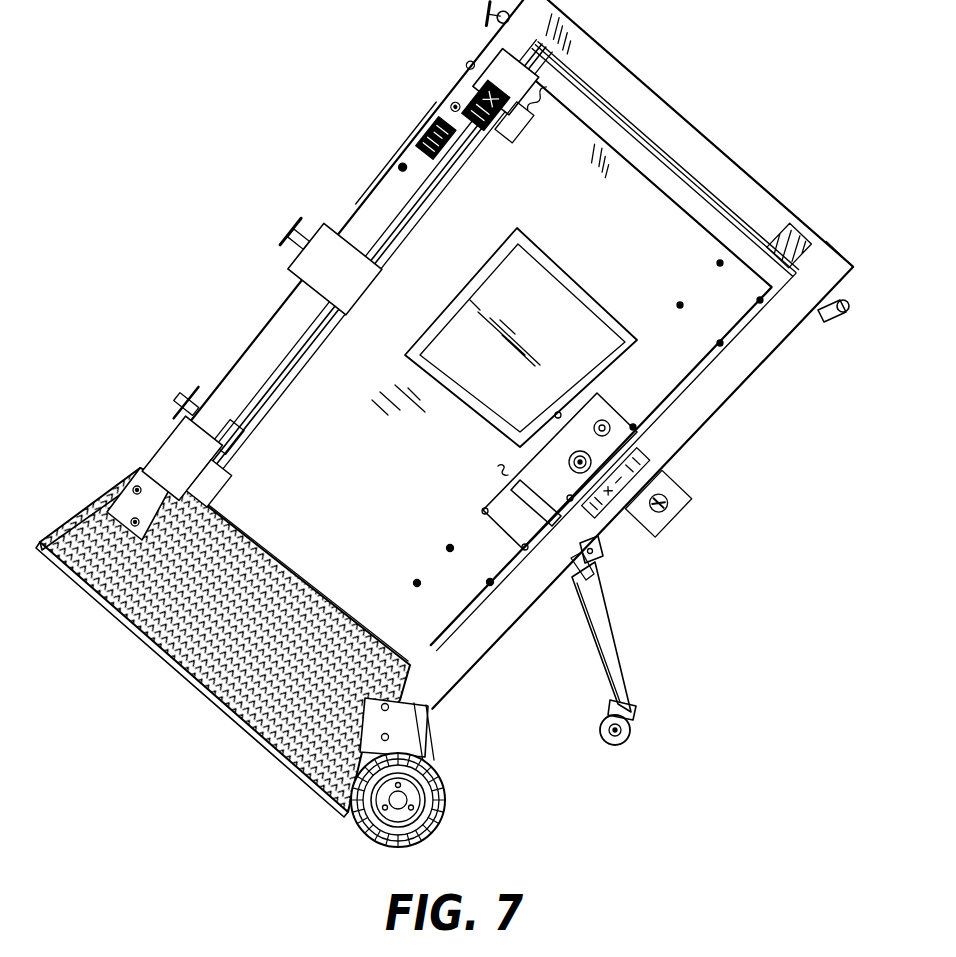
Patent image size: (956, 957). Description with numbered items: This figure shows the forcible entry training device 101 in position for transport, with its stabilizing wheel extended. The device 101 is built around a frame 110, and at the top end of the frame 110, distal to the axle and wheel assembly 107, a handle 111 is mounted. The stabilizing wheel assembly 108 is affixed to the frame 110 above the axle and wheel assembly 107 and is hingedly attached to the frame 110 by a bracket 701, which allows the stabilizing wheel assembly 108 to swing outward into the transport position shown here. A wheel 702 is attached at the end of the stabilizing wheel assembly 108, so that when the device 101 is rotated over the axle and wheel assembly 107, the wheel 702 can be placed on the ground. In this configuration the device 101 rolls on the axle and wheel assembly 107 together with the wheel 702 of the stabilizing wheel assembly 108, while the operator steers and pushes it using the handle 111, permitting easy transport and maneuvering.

The forcible entry training device 101 is at (160, 274).
The frame 110 is at (761, 343).
The handle 111 is at (843, 300).
The bracket 701 is at (598, 558).
The stabilizing wheel assembly 108 is at (613, 616).
The wheel 702 is at (630, 734).
The axle and wheel assembly 107 is at (430, 733).